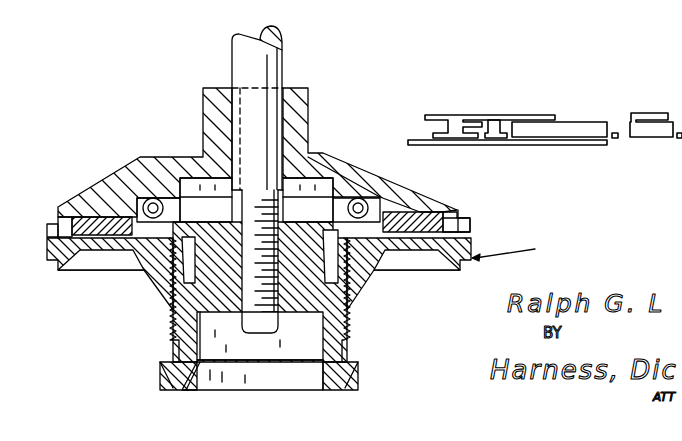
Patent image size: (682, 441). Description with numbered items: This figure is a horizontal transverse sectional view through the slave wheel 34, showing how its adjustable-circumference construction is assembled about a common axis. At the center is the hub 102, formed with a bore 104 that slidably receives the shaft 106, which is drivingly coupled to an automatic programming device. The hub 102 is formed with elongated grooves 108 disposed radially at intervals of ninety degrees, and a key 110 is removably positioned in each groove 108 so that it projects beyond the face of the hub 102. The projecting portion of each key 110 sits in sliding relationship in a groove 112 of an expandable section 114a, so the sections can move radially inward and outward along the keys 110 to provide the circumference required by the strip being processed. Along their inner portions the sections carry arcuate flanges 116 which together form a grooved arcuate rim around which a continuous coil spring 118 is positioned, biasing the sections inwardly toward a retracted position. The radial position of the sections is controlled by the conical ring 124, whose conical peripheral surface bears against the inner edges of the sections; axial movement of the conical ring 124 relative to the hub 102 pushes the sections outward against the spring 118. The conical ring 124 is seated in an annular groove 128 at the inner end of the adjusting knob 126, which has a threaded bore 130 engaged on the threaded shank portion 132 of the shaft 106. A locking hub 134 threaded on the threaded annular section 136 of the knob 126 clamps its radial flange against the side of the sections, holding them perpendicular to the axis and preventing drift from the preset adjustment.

The slave wheel 34 is at (517, 249).
The hub 102 is at (160, 155).
The bore 104 is at (288, 112).
The shaft 106 is at (273, 62).
The elongated grooves 108 is at (93, 222).
The key 110 is at (85, 218).
The groove 112 is at (60, 238).
The expandable section 114a is at (47, 231).
The arcuate flanges 116 is at (188, 210).
The continuous coil spring 118 is at (367, 197).
The conical ring 124 is at (362, 300).
The adjusting knob 126 is at (357, 373).
The annular groove 128 is at (190, 256).
The threaded bore 130 is at (268, 336).
The threaded shank portion 132 is at (248, 370).
The locking hub 134 is at (82, 260).
The threaded annular section 136 is at (170, 318).